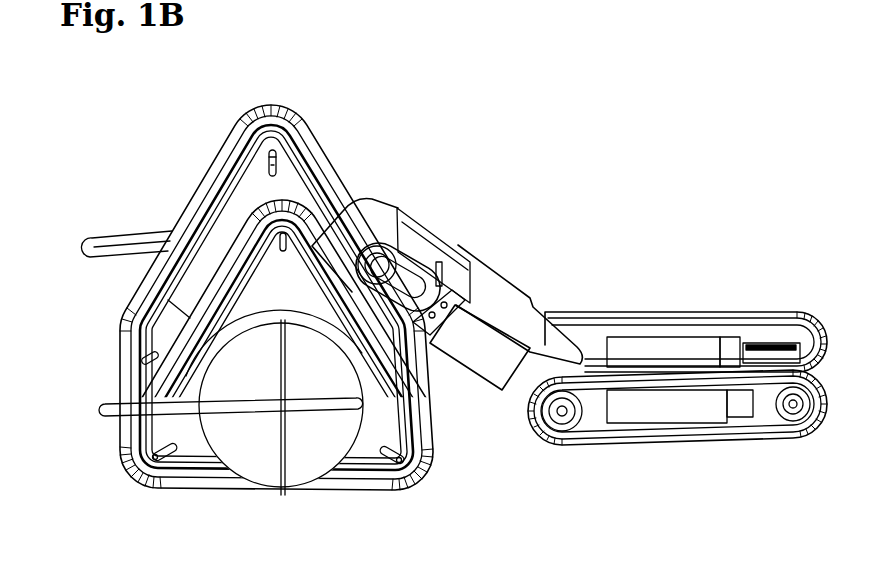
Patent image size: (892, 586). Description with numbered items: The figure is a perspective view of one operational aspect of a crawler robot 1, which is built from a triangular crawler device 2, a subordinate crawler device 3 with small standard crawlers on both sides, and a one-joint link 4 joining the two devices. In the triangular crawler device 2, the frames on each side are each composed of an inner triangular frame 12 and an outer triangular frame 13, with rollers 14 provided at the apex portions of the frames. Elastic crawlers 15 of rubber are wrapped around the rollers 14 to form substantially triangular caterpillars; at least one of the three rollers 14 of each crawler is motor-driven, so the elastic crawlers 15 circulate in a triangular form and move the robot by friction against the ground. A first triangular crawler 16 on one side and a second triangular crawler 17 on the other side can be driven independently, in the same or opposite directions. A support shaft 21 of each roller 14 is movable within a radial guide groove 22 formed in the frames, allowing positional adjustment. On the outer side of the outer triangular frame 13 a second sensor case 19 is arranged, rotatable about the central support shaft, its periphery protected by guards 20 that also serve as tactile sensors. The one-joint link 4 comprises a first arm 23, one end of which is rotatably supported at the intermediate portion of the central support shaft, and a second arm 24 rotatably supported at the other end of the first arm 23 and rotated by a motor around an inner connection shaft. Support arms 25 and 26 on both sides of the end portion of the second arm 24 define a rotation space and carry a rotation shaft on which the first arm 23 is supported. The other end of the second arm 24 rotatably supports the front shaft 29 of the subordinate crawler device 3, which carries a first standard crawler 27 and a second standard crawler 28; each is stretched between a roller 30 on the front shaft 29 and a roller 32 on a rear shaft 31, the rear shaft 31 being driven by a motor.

The crawler robot 1 is at (488, 163).
The triangular crawler device 2 is at (212, 132).
The subordinate crawler device 3 is at (722, 293).
The one-joint link 4 is at (527, 270).
The inner triangular frame 12 is at (253, 193).
The outer triangular frame 13 is at (362, 457).
The rollers 14 is at (297, 130).
The elastic crawlers 15 is at (178, 225).
The first triangular crawler 16 is at (187, 207).
The second triangular crawler 17 is at (177, 328).
The second sensor case 19 is at (307, 447).
The guards 20 is at (140, 237).
The support shaft 21 is at (281, 156).
The radial guide groove 22 is at (278, 168).
The first arm 23 is at (357, 220).
The second arm 24 is at (487, 270).
The support arm 25 is at (412, 233).
The support arm 26 is at (418, 263).
The first standard crawler 27 is at (613, 308).
The second standard crawler 28 is at (688, 453).
The front shaft 29 is at (560, 418).
The roller 30 is at (580, 414).
The rear shaft 31 is at (797, 408).
The roller 32 is at (780, 413).